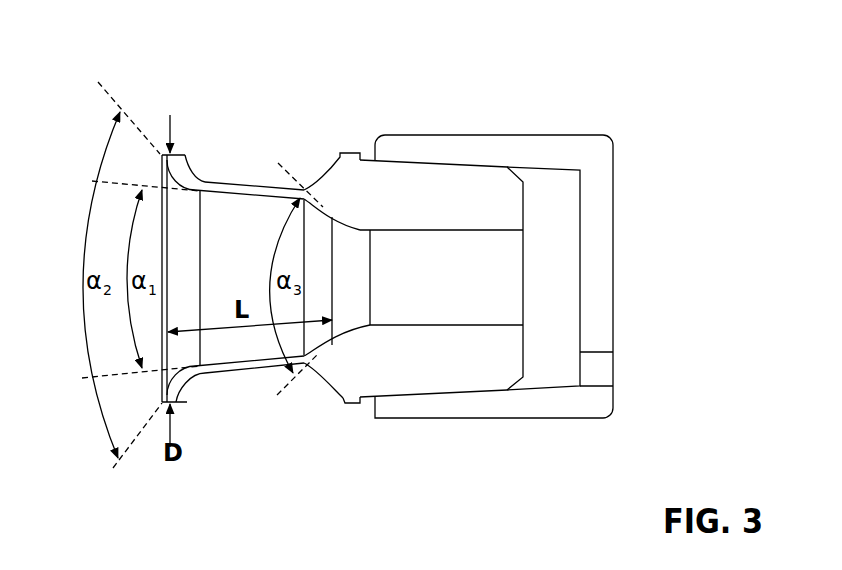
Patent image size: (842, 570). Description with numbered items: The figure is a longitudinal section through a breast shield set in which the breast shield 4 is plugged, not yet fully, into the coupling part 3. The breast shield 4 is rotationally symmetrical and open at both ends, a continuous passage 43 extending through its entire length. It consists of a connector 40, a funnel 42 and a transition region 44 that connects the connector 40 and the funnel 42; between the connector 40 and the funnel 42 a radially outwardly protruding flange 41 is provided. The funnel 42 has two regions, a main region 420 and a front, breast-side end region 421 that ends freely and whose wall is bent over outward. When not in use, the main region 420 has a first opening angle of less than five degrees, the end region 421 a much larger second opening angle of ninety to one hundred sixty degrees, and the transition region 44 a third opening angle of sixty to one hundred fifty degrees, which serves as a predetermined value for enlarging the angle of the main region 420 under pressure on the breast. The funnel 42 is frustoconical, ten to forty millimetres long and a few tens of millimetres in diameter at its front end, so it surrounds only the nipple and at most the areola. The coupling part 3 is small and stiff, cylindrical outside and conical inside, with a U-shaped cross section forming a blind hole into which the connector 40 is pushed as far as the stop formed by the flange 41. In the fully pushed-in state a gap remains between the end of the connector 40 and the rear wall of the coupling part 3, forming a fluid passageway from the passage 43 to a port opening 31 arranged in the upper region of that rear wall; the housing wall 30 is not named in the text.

The coupling part 3 is at (580, 120).
The breast shield 4 is at (268, 82).
The housing 30 is at (603, 232).
The port opening 31 is at (603, 372).
The connector 40 is at (453, 367).
The flange 41 is at (353, 407).
The funnel 42 is at (222, 367).
The passage 43 is at (408, 265).
The transition region 44 is at (320, 238).
The main region 420 is at (230, 267).
The end region 421 is at (189, 217).